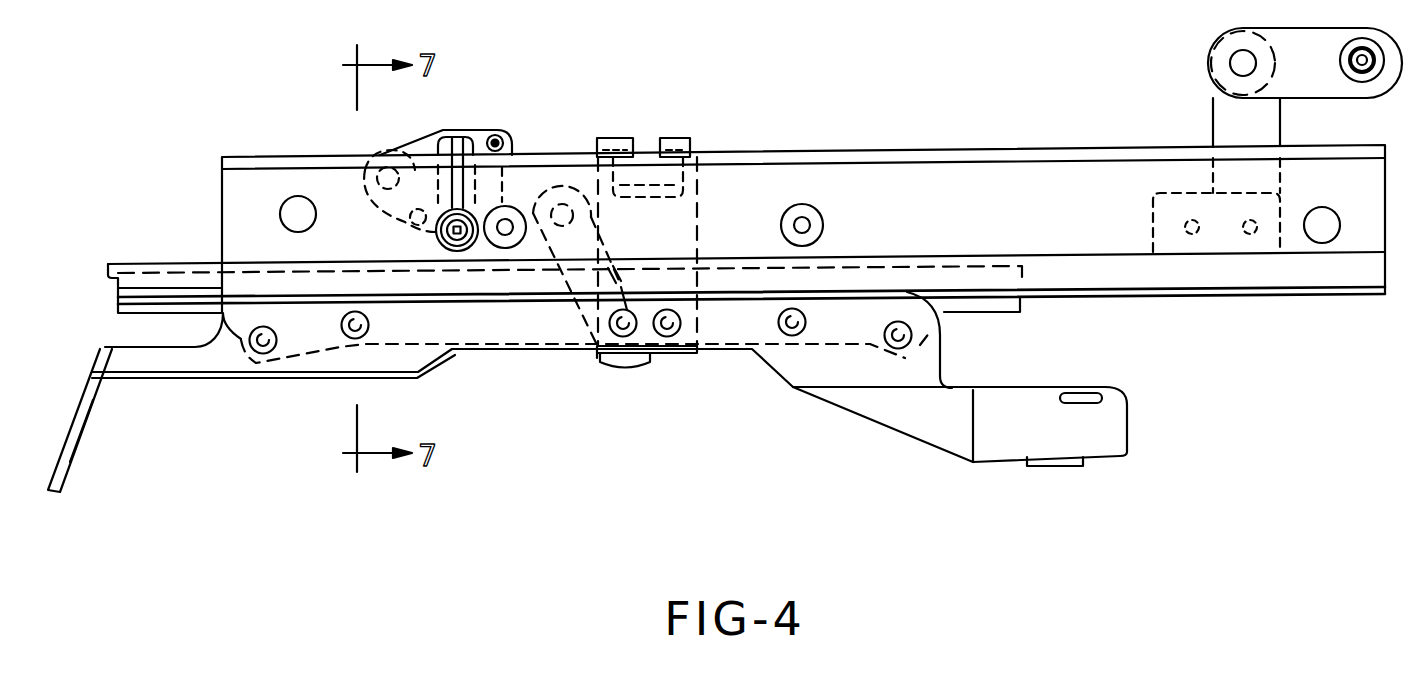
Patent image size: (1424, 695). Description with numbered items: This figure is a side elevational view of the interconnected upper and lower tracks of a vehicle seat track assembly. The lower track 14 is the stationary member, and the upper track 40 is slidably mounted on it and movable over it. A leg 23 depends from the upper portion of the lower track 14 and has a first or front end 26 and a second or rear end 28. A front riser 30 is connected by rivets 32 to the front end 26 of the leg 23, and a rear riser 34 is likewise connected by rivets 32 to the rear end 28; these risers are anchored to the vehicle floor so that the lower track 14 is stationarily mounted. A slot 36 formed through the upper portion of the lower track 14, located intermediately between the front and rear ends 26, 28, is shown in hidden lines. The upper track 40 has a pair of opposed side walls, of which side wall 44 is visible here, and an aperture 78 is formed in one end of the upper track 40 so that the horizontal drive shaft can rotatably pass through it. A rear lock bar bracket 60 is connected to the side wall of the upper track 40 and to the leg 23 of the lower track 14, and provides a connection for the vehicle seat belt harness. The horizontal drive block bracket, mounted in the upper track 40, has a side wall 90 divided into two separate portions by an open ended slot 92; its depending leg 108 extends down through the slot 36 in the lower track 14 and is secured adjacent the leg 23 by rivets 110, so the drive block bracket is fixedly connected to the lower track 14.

The lower track 14 is at (541, 360).
The leg 23 is at (973, 303).
The first or front end 26 is at (137, 303).
The second or rear end 28 is at (1023, 305).
The front riser 30 is at (58, 487).
The rivets 32 is at (263, 354).
The rear riser 34 is at (933, 427).
The slot 36 is at (697, 253).
The upper track 40 is at (887, 180).
The side wall 44 is at (1043, 163).
The rear lock bar bracket 60 is at (1215, 95).
The aperture 78 is at (436, 231).
The second side wall 90 is at (697, 148).
The open ended slot 92 is at (650, 137).
The depending leg 108 is at (683, 356).
The rivets 110 is at (653, 362).